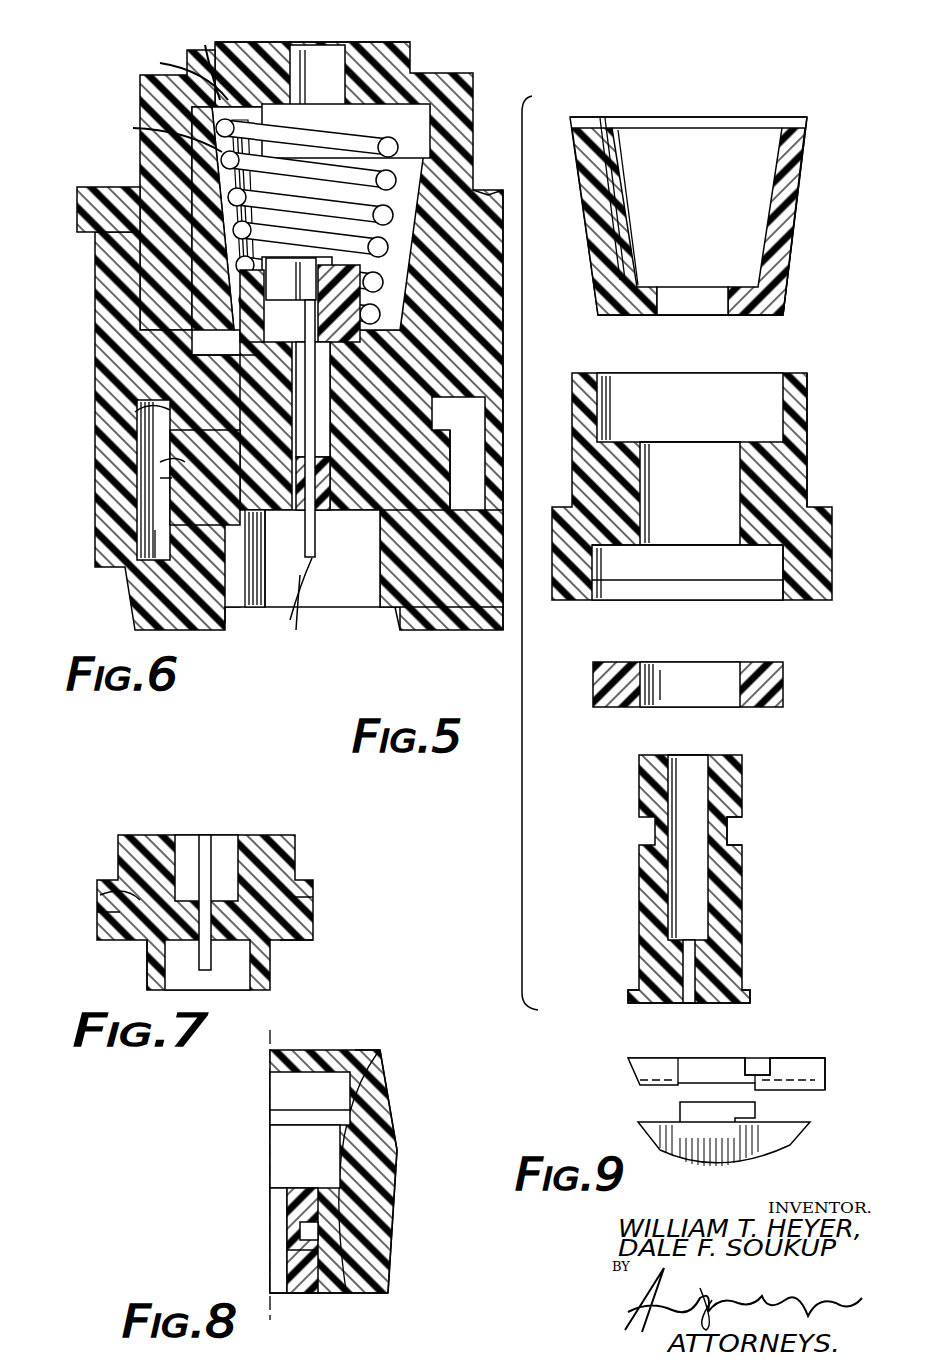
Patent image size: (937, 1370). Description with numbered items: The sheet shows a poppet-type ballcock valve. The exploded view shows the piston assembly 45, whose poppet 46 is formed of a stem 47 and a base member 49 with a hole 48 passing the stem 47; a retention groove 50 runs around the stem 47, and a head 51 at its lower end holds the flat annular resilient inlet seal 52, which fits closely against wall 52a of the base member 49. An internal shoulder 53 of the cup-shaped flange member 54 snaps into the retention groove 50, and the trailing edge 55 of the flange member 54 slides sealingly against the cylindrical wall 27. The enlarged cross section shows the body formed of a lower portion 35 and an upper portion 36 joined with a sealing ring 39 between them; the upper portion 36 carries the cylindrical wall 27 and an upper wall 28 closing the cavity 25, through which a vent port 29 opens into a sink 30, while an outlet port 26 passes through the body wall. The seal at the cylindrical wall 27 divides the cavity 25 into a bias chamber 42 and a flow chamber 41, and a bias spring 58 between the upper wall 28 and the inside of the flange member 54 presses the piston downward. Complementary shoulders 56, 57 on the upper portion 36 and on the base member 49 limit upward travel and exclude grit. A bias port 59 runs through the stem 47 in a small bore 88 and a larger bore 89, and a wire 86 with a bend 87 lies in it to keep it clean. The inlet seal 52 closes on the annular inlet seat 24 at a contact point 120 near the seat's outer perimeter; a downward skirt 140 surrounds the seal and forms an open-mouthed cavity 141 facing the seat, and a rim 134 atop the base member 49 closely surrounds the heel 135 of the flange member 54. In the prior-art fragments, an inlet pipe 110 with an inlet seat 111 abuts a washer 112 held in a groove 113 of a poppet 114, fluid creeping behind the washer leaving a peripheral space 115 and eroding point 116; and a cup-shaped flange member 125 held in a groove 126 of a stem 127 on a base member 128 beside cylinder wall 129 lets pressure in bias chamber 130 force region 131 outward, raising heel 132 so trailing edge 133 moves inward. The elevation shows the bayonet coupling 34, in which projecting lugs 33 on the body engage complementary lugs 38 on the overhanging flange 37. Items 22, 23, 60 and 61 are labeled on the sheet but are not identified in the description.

In FIG. 6, the base plate 22 is at (226, 632).
In FIG. 6, the lower block 23 is at (385, 582).
In FIG. 6, the inlet seat 24 is at (205, 508).
In FIG. 6, the cavity 25 is at (458, 478).
In FIG. 6, the outlet port 26 is at (486, 522).
In FIG. 6, the cylindrical wall 27 is at (425, 140).
In FIG. 6, the upper wall 28 is at (338, 110).
In FIG. 6, the vent port 29 is at (320, 90).
In FIG. 6, the sink 30 is at (262, 50).
In FIG. 9, the projecting lugs 33 is at (756, 1108).
In FIG. 9, the bayonet coupling 34 is at (606, 1080).
In FIG. 9, the lower portion 35 is at (794, 1132).
In FIG. 6, the upper portion 36 is at (466, 74).
In FIG. 9, the upper portion 36 is at (822, 1068).
In FIG. 9, the overhanging flange 37 is at (825, 1084).
In FIG. 9, the complementary lugs 38 is at (752, 1062).
In FIG. 6, the sealing ring 39 is at (120, 228).
In FIG. 6, the flow chamber 41 is at (200, 286).
In FIG. 6, the bias chamber 42 is at (208, 48).
In FIG. 6, the piston assembly 45 is at (200, 250).
In FIG. 5, the piston assembly 45 is at (852, 146).
In FIG. 6, the poppet 46 is at (160, 500).
In FIG. 5, the poppet 46 is at (815, 405).
In FIG. 6, the stem 47 is at (345, 505).
In FIG. 5, the stem 47 is at (743, 910).
In FIG. 7, the stem 47 is at (228, 836).
In FIG. 5, the hole 48 is at (736, 452).
In FIG. 6, the base member 49 is at (226, 381).
In FIG. 5, the base member 49 is at (807, 452).
In FIG. 5, the retention groove 50 is at (735, 836).
In FIG. 5, the head 51 is at (752, 998).
In FIG. 6, the inlet seal 52 is at (267, 512).
In FIG. 5, the inlet seal 52 is at (785, 672).
In FIG. 6, the wall 52a is at (162, 480).
In FIG. 5, the wall 52a is at (781, 560).
In FIG. 5, the internal shoulder 53 is at (706, 304).
In FIG. 5, the cup-shaped flange member 54 is at (795, 258).
In FIG. 5, the trailing edge 55 is at (806, 116).
In FIG. 6, the shoulder 56 is at (135, 412).
In FIG. 6, the shoulder 57 is at (160, 462).
In FIG. 6, the bias spring 58 is at (163, 133).
In FIG. 6, the bias port 59 is at (300, 375).
In FIG. 6, the lever arm 60 is at (178, 75).
In FIG. 6, the slot 61 is at (156, 544).
In FIG. 6, the wire 86 is at (290, 620).
In FIG. 6, the bend 87 is at (316, 270).
In FIG. 5, the small bore portion 88 is at (690, 1003).
In FIG. 5, the larger bore portion 89 is at (700, 775).
In FIG. 7, the inlet pipe 110 is at (272, 986).
In FIG. 7, the inlet seat 111 is at (313, 897).
In FIG. 7, the washer 112 is at (295, 948).
In FIG. 7, the groove 113 is at (125, 895).
In FIG. 7, the poppet 114 is at (118, 856).
In FIG. 7, the peripheral space 115 is at (100, 914).
In FIG. 7, the erosion point 116 is at (148, 955).
In FIG. 6, the inlet seat contact point 120 is at (296, 630).
In FIG. 8, the cup-shaped flange member 125 is at (366, 1180).
In FIG. 8, the groove 126 is at (300, 1232).
In FIG. 8, the stem 127 is at (300, 1295).
In FIG. 8, the base member 128 is at (355, 1294).
In FIG. 8, the cylinder wall 129 is at (396, 1136).
In FIG. 8, the bias chamber 130 is at (310, 1098).
In FIG. 8, the region 131 is at (392, 1215).
In FIG. 8, the heel 132 is at (305, 1250).
In FIG. 8, the trailing edge 133 is at (380, 1082).
In FIG. 6, the rim 134 is at (480, 232).
In FIG. 5, the heel 135 is at (788, 316).
In FIG. 6, the skirt 140 is at (258, 540).
In FIG. 5, the skirt 140 is at (792, 598).
In FIG. 6, the open-mouthed cavity 141 is at (395, 607).